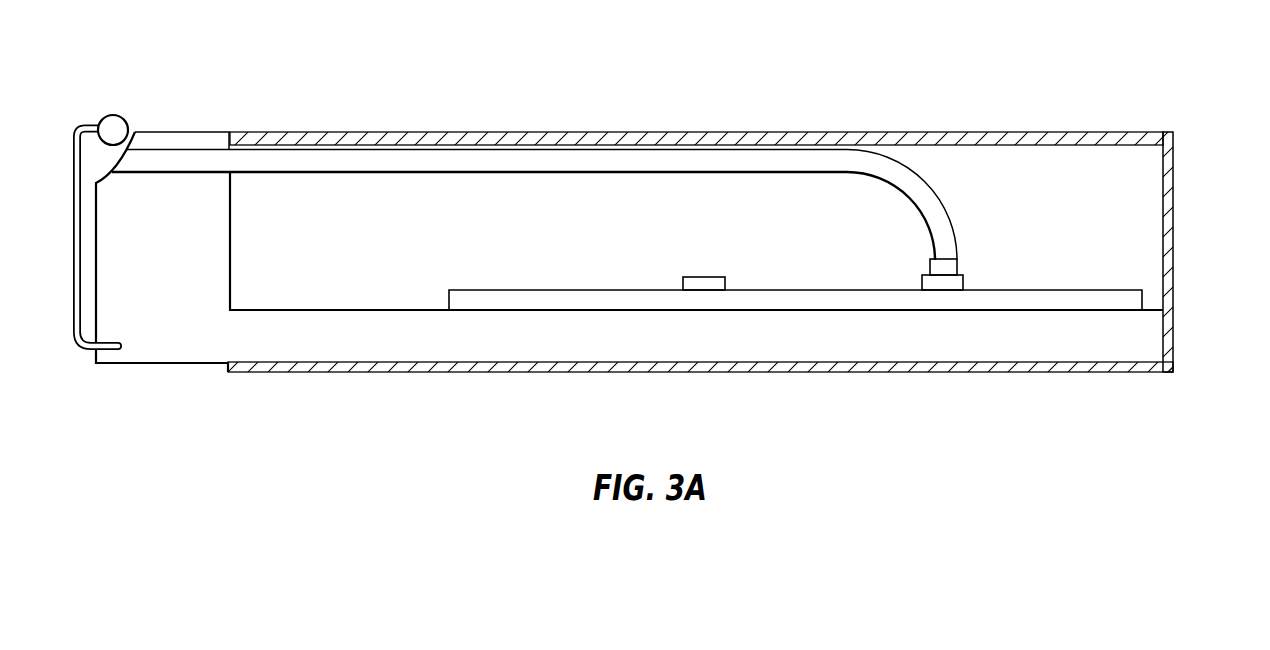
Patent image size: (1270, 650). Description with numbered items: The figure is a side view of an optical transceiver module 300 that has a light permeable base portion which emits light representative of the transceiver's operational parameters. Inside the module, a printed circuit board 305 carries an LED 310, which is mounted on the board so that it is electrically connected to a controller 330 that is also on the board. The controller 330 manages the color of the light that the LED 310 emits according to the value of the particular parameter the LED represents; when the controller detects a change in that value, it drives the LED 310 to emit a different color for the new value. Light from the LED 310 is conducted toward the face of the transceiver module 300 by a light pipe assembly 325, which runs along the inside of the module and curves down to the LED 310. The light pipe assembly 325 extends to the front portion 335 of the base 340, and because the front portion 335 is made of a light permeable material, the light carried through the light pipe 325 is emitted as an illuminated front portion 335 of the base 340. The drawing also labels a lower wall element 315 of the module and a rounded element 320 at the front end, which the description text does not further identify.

The optical transceiver module 300 is at (967, 123).
The printed circuit board 305 is at (795, 318).
The LED 310 is at (968, 265).
The bottom wall 315 is at (222, 367).
The hinge pin 320 is at (122, 184).
The light pipe assembly 325 is at (502, 143).
The controller 330 is at (710, 263).
The front portion 335 is at (167, 320).
The base 340 is at (1175, 327).